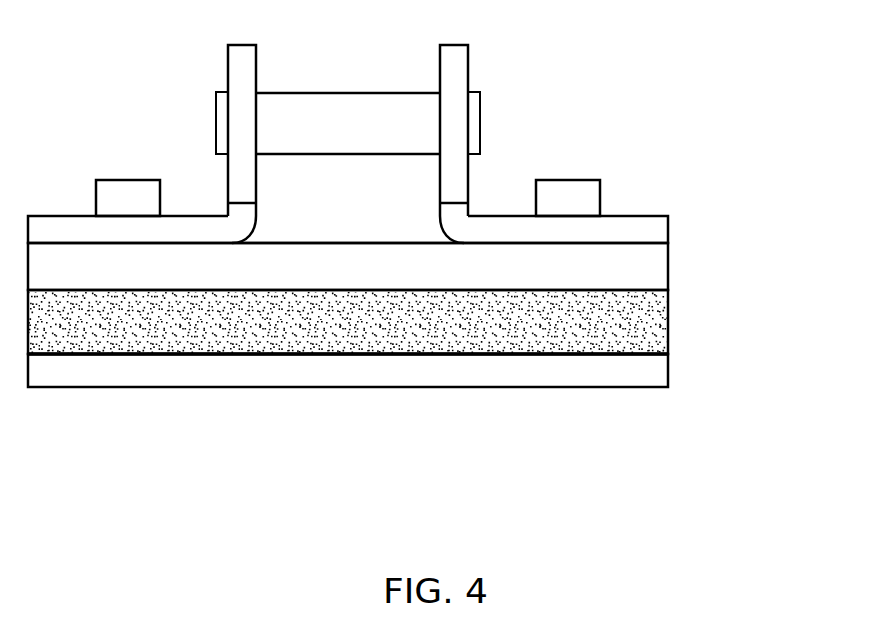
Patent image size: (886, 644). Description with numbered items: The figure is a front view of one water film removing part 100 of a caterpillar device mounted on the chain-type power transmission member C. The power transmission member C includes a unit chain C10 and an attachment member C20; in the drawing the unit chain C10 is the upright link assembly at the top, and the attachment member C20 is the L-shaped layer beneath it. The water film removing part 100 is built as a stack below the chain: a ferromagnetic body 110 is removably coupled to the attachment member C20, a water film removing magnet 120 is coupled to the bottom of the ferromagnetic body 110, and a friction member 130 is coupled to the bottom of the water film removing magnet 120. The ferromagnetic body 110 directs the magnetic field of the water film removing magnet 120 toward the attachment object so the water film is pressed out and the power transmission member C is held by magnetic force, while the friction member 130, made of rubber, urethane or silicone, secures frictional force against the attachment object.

The water film removing part 100 is at (430, 315).
The ferromagnetic body 110 is at (633, 268).
The water film removing magnet 120 is at (633, 320).
The friction member 130 is at (398, 370).
The power transmission member C is at (348, 144).
The unit chain C10 is at (455, 62).
The attachment member C20 is at (633, 230).